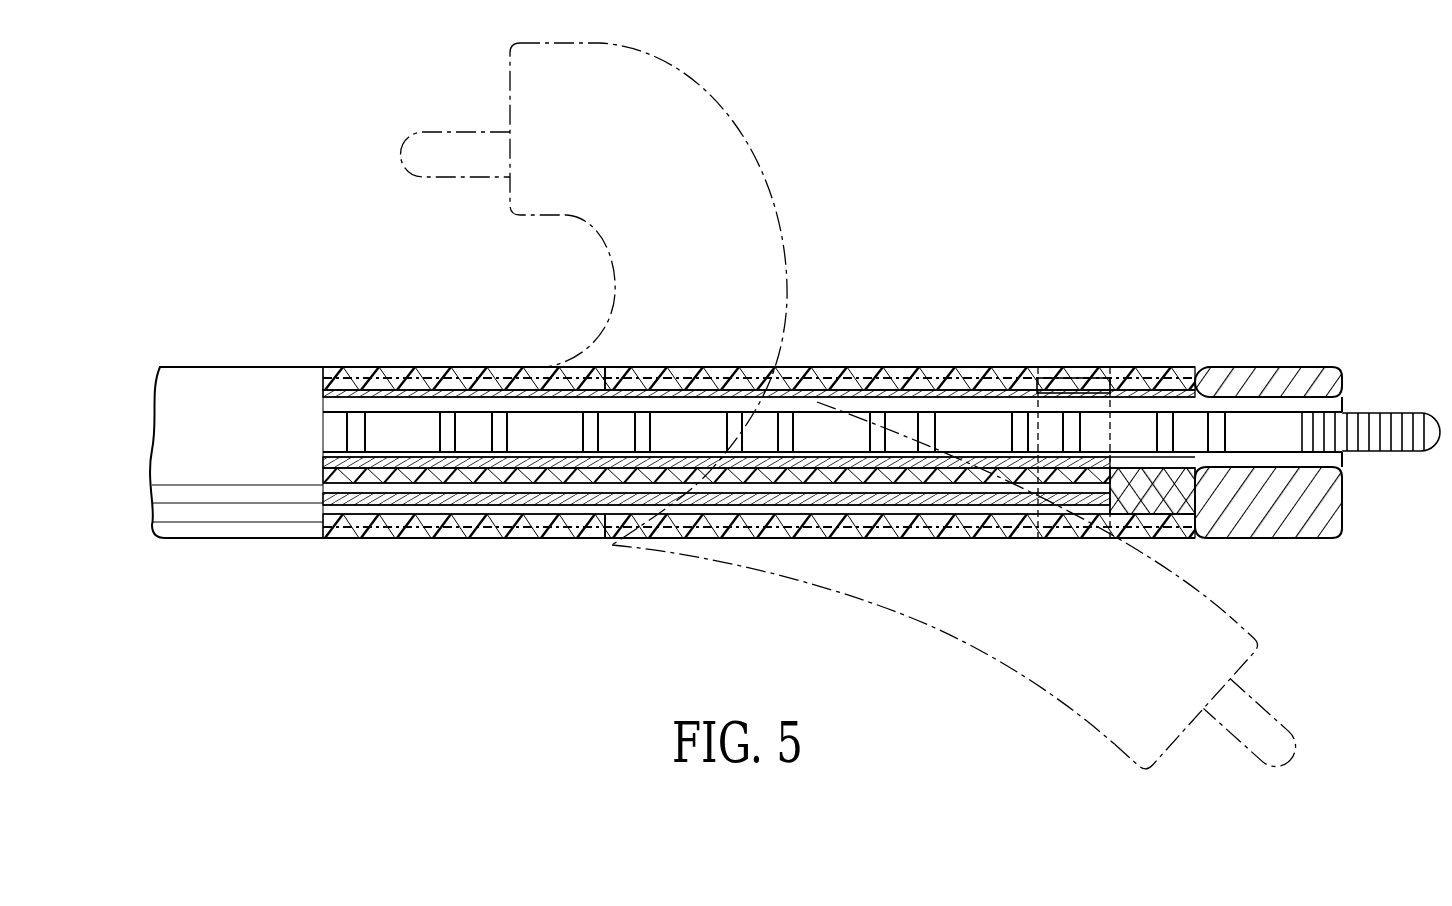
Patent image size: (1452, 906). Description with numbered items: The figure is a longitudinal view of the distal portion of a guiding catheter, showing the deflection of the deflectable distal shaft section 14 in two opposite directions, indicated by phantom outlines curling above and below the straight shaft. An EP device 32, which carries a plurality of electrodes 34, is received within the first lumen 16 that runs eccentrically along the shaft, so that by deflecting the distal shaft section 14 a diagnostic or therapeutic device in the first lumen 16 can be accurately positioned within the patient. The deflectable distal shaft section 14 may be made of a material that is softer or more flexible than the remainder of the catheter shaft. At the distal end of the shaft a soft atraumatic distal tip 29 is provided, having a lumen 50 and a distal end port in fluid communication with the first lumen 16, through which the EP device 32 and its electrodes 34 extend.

The deflectable distal shaft section 14 is at (885, 367).
The first lumen 16 is at (440, 405).
The soft atraumatic distal tip 29 is at (1280, 520).
The EP device 32 is at (1365, 445).
The electrodes 34 is at (1213, 427).
The lumen 50 is at (1343, 398).